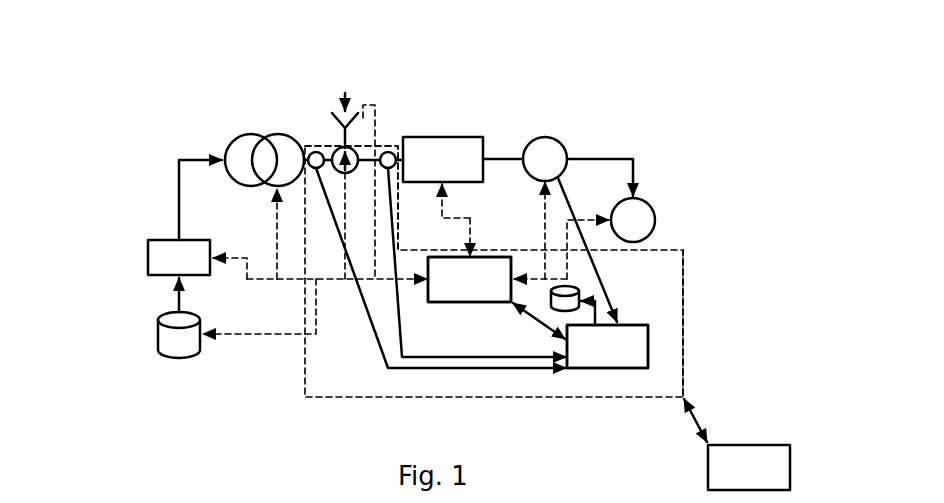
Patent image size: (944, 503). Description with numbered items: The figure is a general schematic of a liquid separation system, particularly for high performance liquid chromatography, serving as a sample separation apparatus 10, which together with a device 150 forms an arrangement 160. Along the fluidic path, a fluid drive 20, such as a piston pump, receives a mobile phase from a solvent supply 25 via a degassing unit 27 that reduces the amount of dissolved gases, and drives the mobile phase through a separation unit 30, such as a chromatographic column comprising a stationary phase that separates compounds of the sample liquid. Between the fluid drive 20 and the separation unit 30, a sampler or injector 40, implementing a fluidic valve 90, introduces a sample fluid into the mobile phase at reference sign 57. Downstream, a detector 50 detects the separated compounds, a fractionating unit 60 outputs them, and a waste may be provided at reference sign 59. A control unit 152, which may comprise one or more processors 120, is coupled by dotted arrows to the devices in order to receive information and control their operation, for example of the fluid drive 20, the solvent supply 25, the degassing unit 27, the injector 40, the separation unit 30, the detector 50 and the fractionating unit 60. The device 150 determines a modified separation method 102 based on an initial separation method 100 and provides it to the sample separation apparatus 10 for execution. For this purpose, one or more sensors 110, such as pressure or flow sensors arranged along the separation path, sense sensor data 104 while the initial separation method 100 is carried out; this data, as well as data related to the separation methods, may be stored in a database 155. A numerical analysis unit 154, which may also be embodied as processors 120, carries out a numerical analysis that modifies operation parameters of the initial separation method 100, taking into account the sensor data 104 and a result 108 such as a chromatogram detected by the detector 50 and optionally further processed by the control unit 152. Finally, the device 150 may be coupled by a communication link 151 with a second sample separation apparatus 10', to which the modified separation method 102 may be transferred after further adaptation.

The sample separation apparatus 10 is at (154, 170).
The second sample separation apparatus 10' is at (749, 467).
The fluid drive 20 is at (242, 142).
The solvent supply 25 is at (158, 337).
The degassing unit 27 is at (148, 257).
The separation unit 30 is at (450, 150).
The sampler or injector 40 is at (323, 87).
The detector 50 is at (545, 152).
The sample introduction point 57 is at (360, 85).
The waste 59 is at (642, 193).
The fractionating unit 60 is at (657, 222).
The fluidic valve 90 is at (337, 147).
The initial separation method 100 is at (613, 305).
The modified separation method 102 is at (351, 198).
The sensor data 104 is at (397, 292).
The result 108 is at (597, 272).
The sensors 110 is at (315, 148).
The processors 120 is at (475, 302).
The device 150 is at (683, 358).
The communication link 151 is at (692, 422).
The control unit 152 is at (469, 279).
The numerical analysis unit 154 is at (580, 335).
The database 155 is at (553, 282).
The arrangement 160 is at (647, 60).